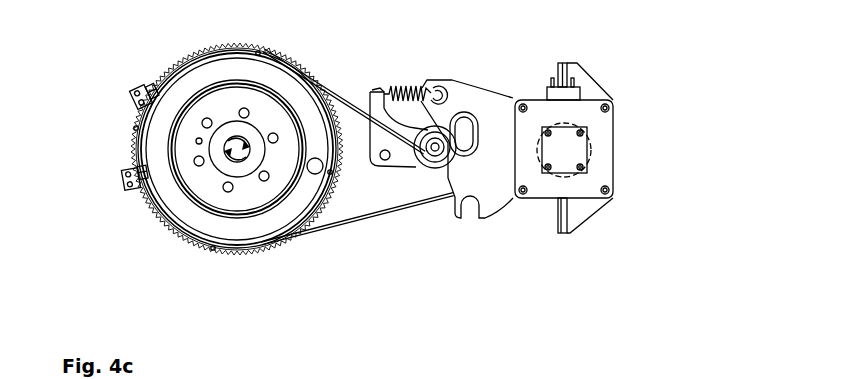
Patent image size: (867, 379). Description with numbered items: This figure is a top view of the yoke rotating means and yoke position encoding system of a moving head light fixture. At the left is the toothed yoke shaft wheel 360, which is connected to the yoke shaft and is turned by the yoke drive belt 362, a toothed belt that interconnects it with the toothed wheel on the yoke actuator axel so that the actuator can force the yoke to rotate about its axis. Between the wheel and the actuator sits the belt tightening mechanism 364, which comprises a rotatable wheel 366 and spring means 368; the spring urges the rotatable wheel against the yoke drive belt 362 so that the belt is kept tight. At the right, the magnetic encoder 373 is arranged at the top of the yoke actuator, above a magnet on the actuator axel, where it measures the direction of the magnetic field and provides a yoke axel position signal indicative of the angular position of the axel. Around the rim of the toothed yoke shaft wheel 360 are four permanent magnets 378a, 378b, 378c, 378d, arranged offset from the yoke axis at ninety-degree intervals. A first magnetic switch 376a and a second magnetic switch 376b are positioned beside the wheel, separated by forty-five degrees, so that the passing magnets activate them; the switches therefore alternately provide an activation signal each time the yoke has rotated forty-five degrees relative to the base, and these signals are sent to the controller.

The toothed yoke shaft wheel 360 is at (175, 72).
The yoke drive belt 362 is at (370, 222).
The belt tightening mechanism 364 is at (385, 66).
The rotatable wheel 366 is at (434, 140).
The spring means 368 is at (398, 90).
The magnetic encoder 373 is at (556, 150).
The first magnetic switch 376a is at (140, 188).
The second magnetic switch 376b is at (133, 95).
The permanent magnet 378a is at (256, 51).
The permanent magnet 378b is at (332, 175).
The permanent magnet 378c is at (212, 250).
The permanent magnet 378d is at (134, 128).